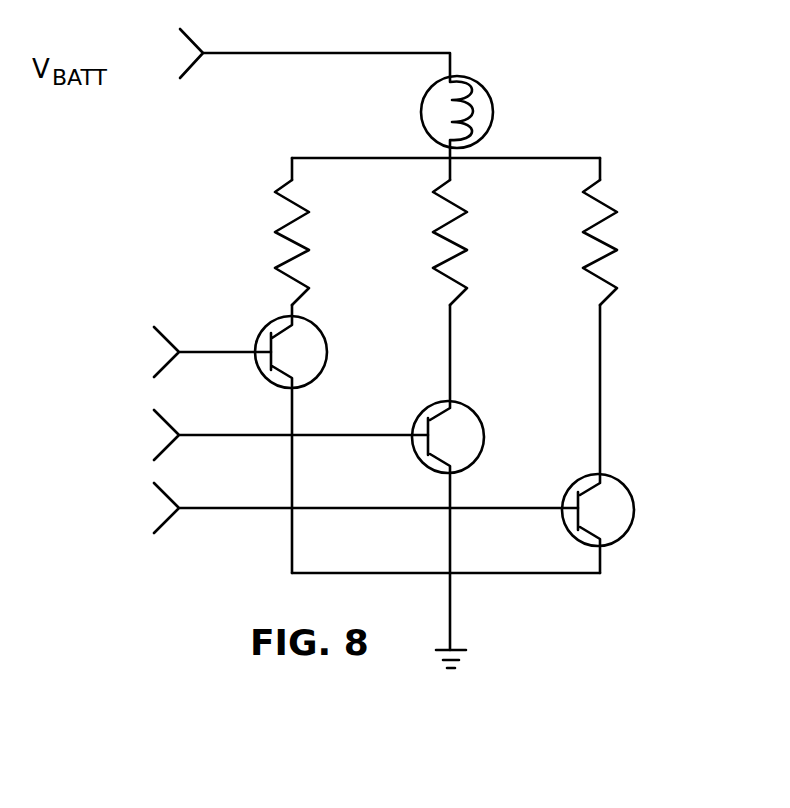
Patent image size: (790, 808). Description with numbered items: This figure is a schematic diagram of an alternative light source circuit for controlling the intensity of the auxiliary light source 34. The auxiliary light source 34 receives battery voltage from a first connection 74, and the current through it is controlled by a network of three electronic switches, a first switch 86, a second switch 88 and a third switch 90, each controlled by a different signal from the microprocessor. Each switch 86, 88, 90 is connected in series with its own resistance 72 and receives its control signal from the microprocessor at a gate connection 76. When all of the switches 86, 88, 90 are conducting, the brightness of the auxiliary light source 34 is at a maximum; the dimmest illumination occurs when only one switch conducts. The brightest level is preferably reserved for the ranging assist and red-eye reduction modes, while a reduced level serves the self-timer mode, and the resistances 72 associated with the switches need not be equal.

The first connection 74 is at (187, 52).
The auxiliary light source 34 is at (490, 91).
The resistance 72 is at (274, 237).
The gate connection 76 is at (161, 351).
The first switch 86 is at (317, 320).
The second switch 88 is at (472, 404).
The third switch 90 is at (624, 474).